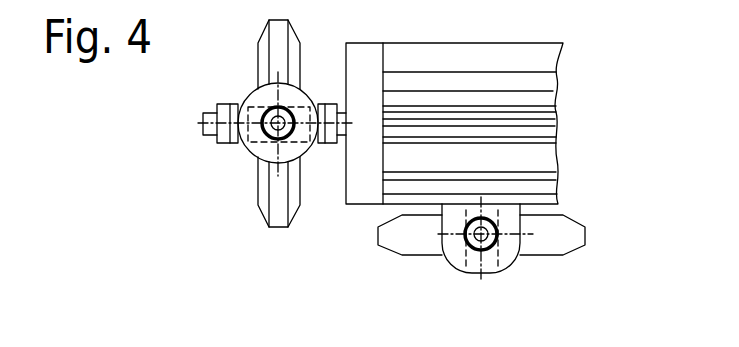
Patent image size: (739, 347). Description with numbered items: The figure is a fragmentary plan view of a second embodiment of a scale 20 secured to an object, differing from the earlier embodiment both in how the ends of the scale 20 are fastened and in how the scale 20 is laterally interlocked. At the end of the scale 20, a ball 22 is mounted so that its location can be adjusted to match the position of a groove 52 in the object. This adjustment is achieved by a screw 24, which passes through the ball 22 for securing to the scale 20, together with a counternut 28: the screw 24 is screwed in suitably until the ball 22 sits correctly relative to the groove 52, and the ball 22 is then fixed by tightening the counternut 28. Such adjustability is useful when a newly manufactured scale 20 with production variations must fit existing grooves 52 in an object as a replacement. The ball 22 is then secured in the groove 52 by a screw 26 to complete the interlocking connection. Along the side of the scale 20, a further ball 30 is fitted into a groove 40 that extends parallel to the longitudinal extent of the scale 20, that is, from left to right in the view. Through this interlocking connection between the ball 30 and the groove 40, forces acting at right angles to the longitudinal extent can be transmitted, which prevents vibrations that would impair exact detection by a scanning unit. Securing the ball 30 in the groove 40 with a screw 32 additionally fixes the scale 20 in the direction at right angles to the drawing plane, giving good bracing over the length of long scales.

The scale 20 is at (552, 53).
The ball 22 is at (297, 98).
The screw 24 is at (228, 140).
The screw 26 is at (268, 133).
The counternut 28 is at (327, 143).
The ball 30 is at (457, 255).
The screw 32 is at (496, 240).
The groove 40 is at (410, 246).
The groove 52 is at (268, 42).